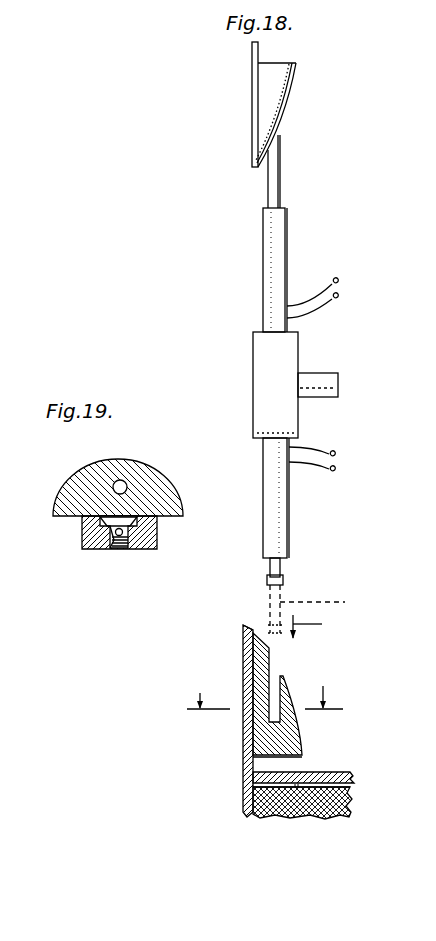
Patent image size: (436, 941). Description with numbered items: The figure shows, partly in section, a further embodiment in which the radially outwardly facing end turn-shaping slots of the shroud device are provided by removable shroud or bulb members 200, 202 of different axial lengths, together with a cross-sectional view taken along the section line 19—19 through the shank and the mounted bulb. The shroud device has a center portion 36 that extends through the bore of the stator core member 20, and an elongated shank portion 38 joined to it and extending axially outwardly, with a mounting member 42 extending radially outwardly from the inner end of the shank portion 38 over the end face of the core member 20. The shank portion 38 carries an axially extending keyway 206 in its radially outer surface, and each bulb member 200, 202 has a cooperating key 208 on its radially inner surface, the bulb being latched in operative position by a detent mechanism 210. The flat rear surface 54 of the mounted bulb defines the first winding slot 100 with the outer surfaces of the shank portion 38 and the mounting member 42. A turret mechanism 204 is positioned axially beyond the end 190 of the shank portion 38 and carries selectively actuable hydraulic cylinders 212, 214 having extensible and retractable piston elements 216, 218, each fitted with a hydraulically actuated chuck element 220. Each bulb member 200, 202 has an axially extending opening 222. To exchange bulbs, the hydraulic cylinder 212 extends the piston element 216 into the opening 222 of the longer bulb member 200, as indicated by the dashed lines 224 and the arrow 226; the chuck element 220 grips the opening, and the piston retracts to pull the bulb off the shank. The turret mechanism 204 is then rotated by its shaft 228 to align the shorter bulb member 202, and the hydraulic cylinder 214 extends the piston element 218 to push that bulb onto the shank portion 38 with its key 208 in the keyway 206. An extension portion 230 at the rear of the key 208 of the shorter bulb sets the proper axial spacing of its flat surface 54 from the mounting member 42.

In FIG. 18, the section line 19— 19 is at (265, 689).
In FIG. 18, the stator core member 20 is at (352, 800).
In FIG. 18, the center portion 36 is at (243, 797).
In FIG. 18, the shank portion 38 is at (243, 641).
In FIG. 19, the shank portion 38 is at (158, 538).
In FIG. 18, the mounting member 42 is at (340, 770).
In FIG. 18, the flat rear surface 54 is at (288, 62).
In FIG. 18, the first winding slot 100 is at (262, 764).
In FIG. 18, the end of shank portion 190 is at (245, 623).
In FIG. 18, the bulb member 200 is at (303, 742).
In FIG. 19, the bulb member 200 is at (165, 486).
In FIG. 18, the bulb member 202 is at (296, 100).
In FIG. 18, the turret mechanism 204 is at (303, 352).
In FIG. 19, the keyway 206 is at (108, 532).
In FIG. 18, the key 208 is at (252, 121).
In FIG. 19, the key 208 is at (100, 519).
In FIG. 19, the detent mechanism 210 is at (121, 548).
In FIG. 18, the hydraulic cylinder 212 is at (289, 517).
In FIG. 18, the hydraulic cylinder 214 is at (287, 238).
In FIG. 18, the piston element 216 is at (281, 567).
In FIG. 18, the piston element 218 is at (280, 181).
In FIG. 18, the chuck element 220 is at (283, 580).
In FIG. 18, the axially extending opening 222 is at (275, 698).
In FIG. 19, the axially extending opening 222 is at (122, 481).
In FIG. 18, the dashed lines 224 is at (329, 605).
In FIG. 18, the arrow 226 is at (321, 627).
In FIG. 18, the shaft 228 is at (338, 385).
In FIG. 18, the extension portion 230 is at (262, 47).